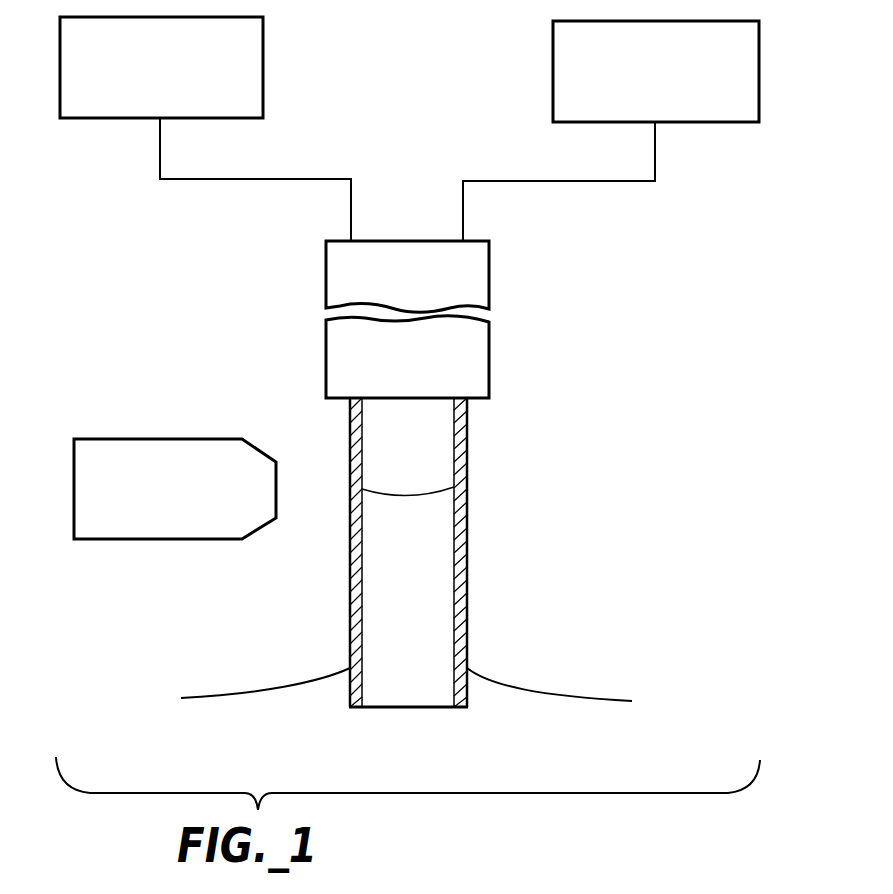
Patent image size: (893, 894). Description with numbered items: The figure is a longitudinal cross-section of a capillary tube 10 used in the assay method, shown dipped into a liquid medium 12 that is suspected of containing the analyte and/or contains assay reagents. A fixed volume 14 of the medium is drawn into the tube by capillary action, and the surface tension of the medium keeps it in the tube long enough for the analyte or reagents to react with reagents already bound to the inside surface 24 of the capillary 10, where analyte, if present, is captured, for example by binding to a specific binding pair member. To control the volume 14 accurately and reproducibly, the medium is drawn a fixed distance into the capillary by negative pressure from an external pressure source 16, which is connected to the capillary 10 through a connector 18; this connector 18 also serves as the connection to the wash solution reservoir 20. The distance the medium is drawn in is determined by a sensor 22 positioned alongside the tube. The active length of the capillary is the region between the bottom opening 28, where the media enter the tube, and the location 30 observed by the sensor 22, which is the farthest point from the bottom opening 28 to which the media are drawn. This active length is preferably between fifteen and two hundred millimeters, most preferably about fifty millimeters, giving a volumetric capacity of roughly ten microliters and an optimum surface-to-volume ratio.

The capillary tube 10 is at (461, 586).
The liquid medium 12 is at (500, 685).
The fixed volume 14 is at (443, 625).
The external pressure source 16 is at (552, 60).
The connector 18 is at (489, 357).
The wash solution reservoir 20 is at (264, 60).
The sensor 22 is at (148, 439).
The inside surface 24 is at (447, 690).
The bottom opening 28 is at (385, 709).
The location observed by sensor 30 is at (480, 478).